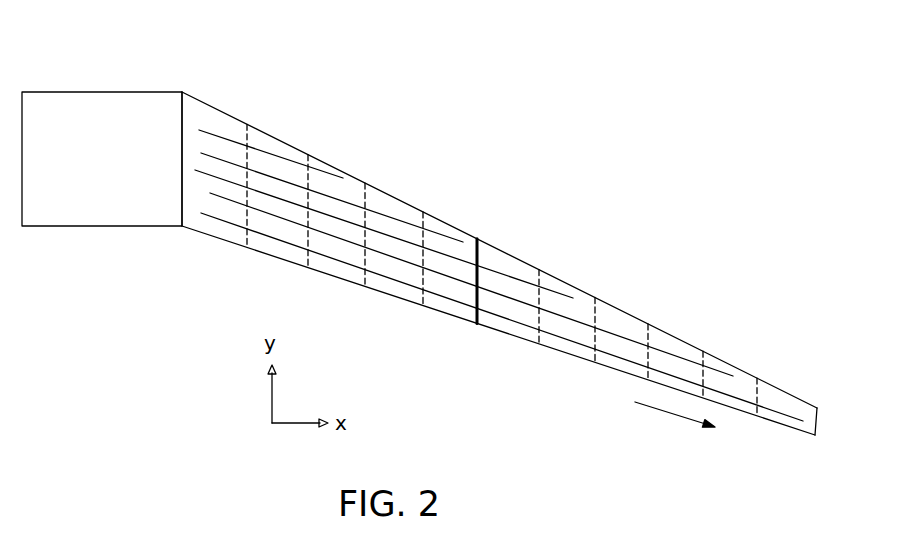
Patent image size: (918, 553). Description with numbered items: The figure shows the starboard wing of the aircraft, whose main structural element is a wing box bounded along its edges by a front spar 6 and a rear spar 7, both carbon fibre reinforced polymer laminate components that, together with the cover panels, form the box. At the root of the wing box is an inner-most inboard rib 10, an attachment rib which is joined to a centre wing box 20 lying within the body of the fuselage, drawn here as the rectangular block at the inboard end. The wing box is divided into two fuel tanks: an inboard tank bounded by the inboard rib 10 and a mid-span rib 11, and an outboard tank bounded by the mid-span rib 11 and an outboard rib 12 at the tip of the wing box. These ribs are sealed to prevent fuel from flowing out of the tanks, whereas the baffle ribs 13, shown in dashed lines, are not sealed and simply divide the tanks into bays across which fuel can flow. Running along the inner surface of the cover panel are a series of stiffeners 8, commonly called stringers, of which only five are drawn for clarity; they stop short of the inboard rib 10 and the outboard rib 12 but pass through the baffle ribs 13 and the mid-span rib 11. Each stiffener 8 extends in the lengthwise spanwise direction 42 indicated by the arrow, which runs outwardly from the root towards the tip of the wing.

The centre wing box 20 is at (138, 122).
The inboard rib 10 is at (182, 153).
The front spar 6 is at (393, 197).
The rear spar 7 is at (382, 292).
The stiffeners 8 is at (502, 325).
The mid-span rib 11 is at (478, 250).
The outboard rib 12 is at (817, 417).
The baffle ribs 13 is at (247, 168).
The spanwise direction 42 is at (670, 415).